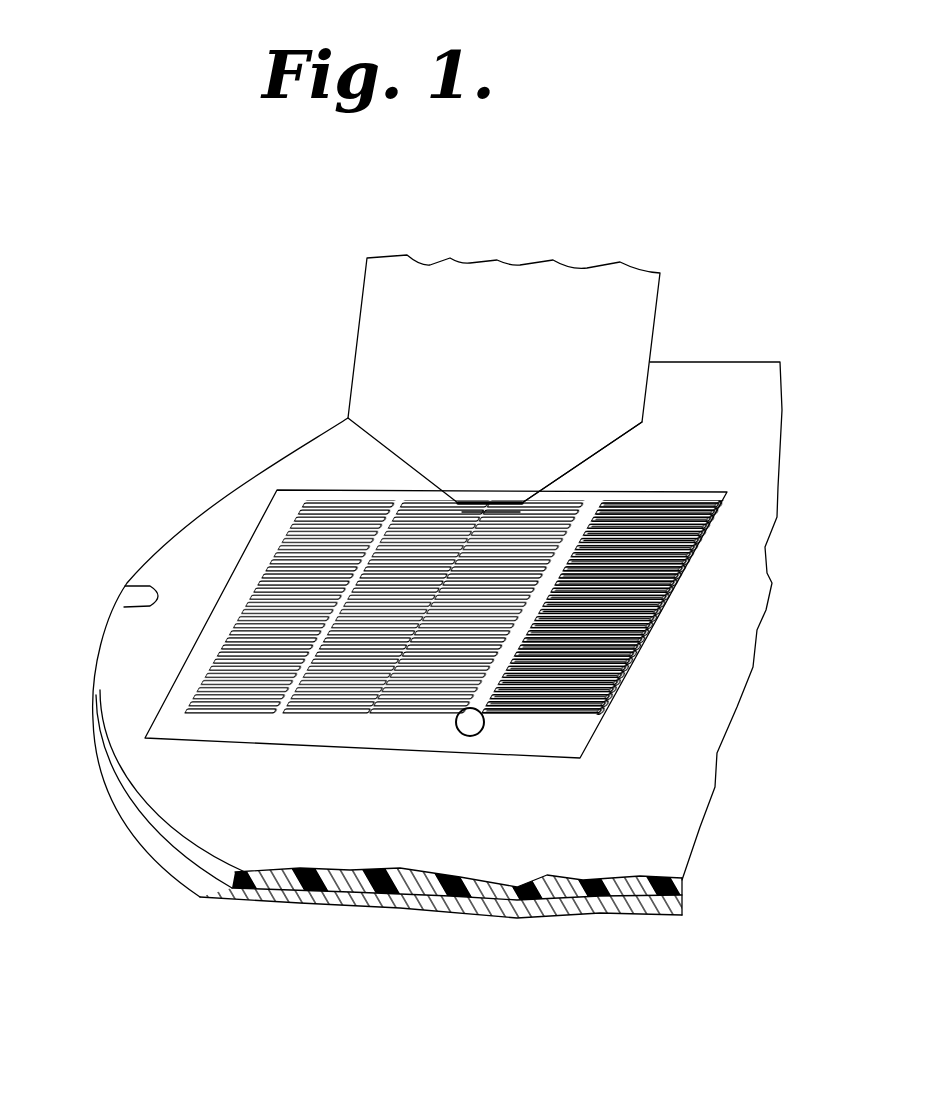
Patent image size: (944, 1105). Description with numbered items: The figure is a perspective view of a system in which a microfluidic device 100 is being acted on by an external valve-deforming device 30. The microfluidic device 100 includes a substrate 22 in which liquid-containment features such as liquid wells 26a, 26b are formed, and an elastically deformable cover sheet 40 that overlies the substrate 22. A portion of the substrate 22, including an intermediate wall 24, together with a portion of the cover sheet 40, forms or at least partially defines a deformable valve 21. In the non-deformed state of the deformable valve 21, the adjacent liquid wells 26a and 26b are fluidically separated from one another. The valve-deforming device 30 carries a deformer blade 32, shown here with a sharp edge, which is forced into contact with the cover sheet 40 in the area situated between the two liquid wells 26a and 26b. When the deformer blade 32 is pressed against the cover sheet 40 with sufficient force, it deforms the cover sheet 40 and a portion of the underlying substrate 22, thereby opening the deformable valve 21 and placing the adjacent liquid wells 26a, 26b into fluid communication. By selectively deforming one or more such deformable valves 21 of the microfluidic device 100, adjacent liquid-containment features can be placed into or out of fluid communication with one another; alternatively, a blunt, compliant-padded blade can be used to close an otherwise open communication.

The microfluidic device 100 is at (180, 505).
The valve-deforming device 30 is at (352, 295).
The deformer blade 32 is at (613, 387).
The liquid well 26a is at (577, 507).
The liquid well 26b is at (420, 505).
The deformable valve 21 is at (483, 507).
The intermediate wall 24 is at (468, 737).
The cover sheet 40 is at (180, 677).
The substrate 22 is at (200, 866).